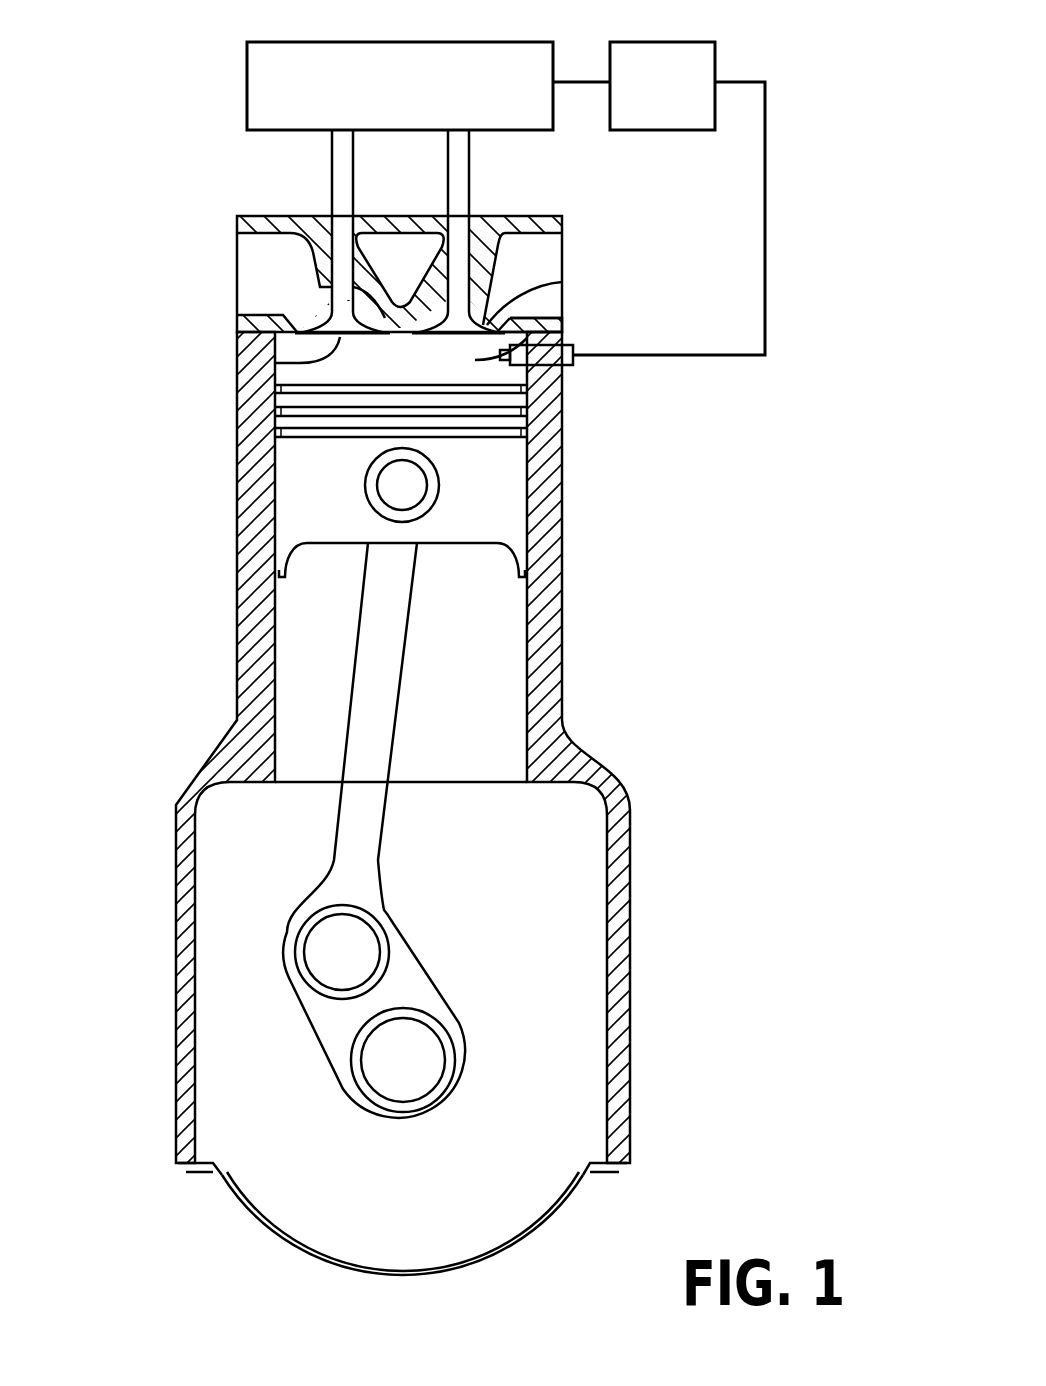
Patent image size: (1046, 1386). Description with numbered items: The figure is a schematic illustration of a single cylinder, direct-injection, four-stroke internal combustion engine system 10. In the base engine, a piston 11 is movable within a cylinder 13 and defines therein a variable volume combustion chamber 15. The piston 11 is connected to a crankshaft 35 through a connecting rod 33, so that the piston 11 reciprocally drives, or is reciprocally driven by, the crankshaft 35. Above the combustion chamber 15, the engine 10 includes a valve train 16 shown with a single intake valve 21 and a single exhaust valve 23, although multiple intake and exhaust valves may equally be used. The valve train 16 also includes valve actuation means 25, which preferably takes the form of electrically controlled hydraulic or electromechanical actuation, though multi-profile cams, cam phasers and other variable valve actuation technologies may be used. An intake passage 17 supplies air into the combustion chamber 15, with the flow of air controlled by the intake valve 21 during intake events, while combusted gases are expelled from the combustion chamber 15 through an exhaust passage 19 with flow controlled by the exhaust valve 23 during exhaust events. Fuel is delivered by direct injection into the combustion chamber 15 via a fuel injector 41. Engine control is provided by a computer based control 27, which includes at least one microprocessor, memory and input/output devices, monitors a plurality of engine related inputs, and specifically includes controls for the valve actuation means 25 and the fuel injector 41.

The internal combustion engine system 10 is at (198, 73).
The piston 11 is at (323, 522).
The cylinder 13 is at (480, 666).
The combustion chamber 15 is at (565, 338).
The valve train 16 is at (205, 181).
The intake passage 17 is at (247, 276).
The exhaust passage 19 is at (537, 268).
The intake valve 21 is at (275, 362).
The exhaust valve 23 is at (562, 282).
The valve actuation means 25 is at (419, 100).
The computer based control 27 is at (678, 100).
The connecting rod 33 is at (365, 713).
The crankshaft 35 is at (330, 1030).
The fuel injector 41 is at (558, 360).